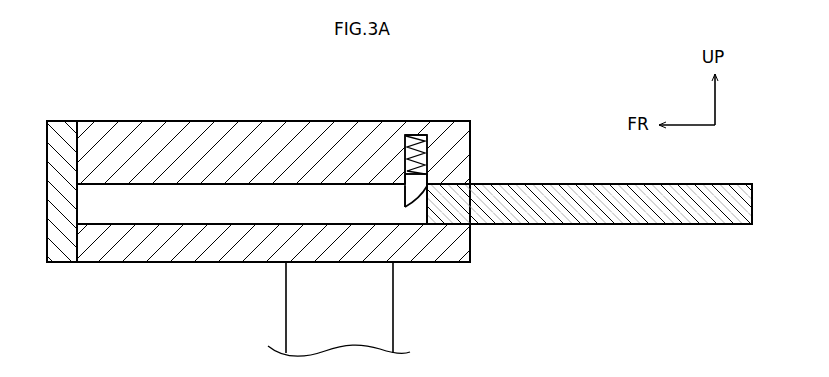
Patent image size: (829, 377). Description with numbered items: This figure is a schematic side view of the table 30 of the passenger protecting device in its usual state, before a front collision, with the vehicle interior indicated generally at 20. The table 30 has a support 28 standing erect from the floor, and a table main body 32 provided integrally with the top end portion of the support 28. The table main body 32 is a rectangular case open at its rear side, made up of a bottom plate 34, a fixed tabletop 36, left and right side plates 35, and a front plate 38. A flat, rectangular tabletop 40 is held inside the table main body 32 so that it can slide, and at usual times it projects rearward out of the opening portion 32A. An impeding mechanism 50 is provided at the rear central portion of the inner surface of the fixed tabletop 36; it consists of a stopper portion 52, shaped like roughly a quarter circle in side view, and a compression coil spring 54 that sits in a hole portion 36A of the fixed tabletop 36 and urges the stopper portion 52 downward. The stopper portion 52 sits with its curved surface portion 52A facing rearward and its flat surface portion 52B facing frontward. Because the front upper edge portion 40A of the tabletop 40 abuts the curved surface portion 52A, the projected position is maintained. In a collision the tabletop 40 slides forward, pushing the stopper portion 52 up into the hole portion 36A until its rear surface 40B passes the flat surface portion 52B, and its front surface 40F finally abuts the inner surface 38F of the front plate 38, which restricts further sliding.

The support device 20 is at (473, 112).
The support 28 is at (384, 316).
The table 30 is at (206, 110).
The table main body 32 is at (46, 120).
The opening portion 32A is at (428, 205).
The bottom plate 34 is at (197, 263).
The side plates 35 is at (130, 205).
The fixed tabletop 36 is at (266, 120).
The hole portion 36A is at (415, 134).
The front plate 38 is at (44, 178).
The inner surface of the front plate 38F is at (80, 215).
The tabletop 40 is at (560, 183).
The front upper edge portion 40A is at (458, 184).
The rear surface 40B is at (752, 190).
The front surface 40F is at (440, 220).
The impeding mechanism 50 is at (397, 212).
The stopper portion 52 is at (412, 210).
The curved surface portion 52A is at (408, 208).
The flat surface portion 52B is at (385, 206).
The compression coil spring 54 is at (432, 152).